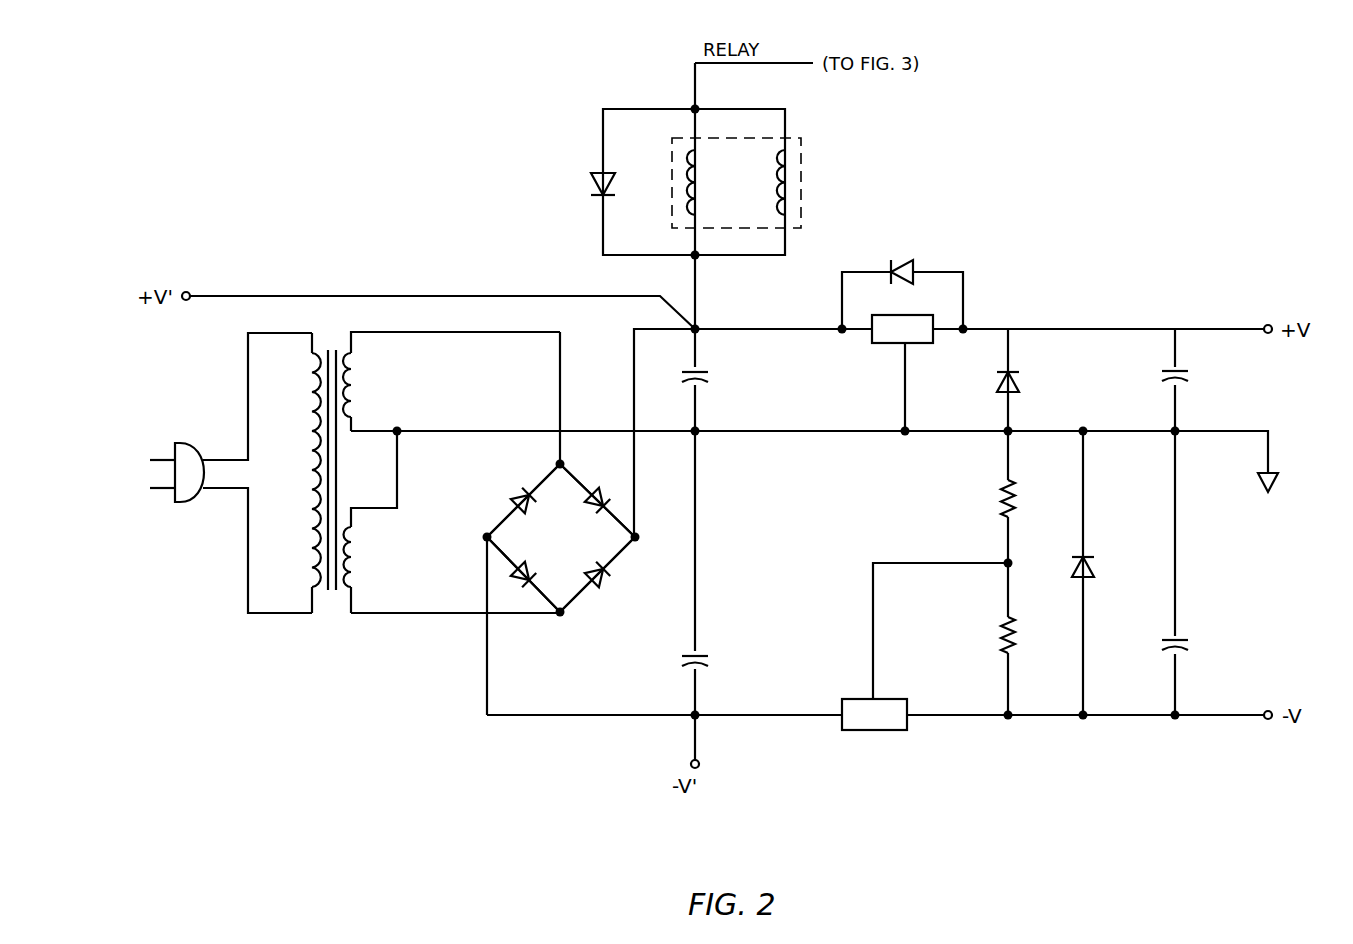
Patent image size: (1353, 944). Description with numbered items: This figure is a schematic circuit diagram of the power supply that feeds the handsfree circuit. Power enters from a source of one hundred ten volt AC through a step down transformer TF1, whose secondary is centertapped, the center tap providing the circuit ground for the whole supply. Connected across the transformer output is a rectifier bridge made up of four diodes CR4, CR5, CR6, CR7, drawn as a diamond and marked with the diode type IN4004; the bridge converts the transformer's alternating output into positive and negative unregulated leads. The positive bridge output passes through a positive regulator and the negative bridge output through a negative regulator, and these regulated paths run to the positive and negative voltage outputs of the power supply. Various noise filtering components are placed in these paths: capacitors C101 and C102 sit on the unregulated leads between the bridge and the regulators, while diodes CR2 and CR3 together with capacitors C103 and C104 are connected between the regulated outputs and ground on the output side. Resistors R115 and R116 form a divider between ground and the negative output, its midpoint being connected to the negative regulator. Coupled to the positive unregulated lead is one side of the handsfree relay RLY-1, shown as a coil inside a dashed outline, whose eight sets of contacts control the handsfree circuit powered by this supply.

The handsfree relay RLY-1 is at (801, 193).
The diode CR2 is at (1033, 380).
The diode CR3 is at (1107, 573).
The rectifier bridge diode CR4 is at (608, 587).
The rectifier bridge diode CR5 is at (510, 487).
The rectifier bridge diode CR6 is at (607, 487).
The rectifier bridge diode CR7 is at (513, 587).
The bridge rectifier diode type IN4004 is at (561, 555).
The filter capacitor C101 is at (725, 377).
The filter capacitor C102 is at (725, 660).
The output capacitor C103 is at (1203, 380).
The output capacitor C104 is at (1204, 573).
The resistor R115 is at (980, 499).
The resistor R116 is at (980, 639).
The step down transformer TF1 is at (381, 491).